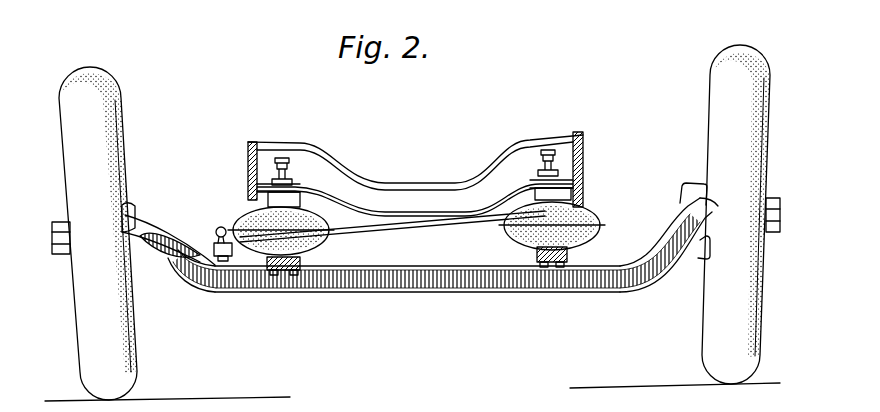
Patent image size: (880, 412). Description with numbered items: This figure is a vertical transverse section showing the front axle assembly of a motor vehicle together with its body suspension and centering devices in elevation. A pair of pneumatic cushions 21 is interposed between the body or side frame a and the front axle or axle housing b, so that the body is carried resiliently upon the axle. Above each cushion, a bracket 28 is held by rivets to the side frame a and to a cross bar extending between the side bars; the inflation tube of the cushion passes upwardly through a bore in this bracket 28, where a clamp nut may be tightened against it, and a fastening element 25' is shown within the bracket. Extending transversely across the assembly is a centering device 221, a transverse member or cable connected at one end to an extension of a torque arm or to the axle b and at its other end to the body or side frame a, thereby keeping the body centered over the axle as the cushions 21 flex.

The body or side frame a is at (251, 144).
The bolt 25' is at (415, 149).
The bracket 28 is at (348, 199).
The pneumatic cushion 21 is at (246, 226).
The centering device 221 is at (412, 230).
The front axle or axle housing b is at (461, 279).